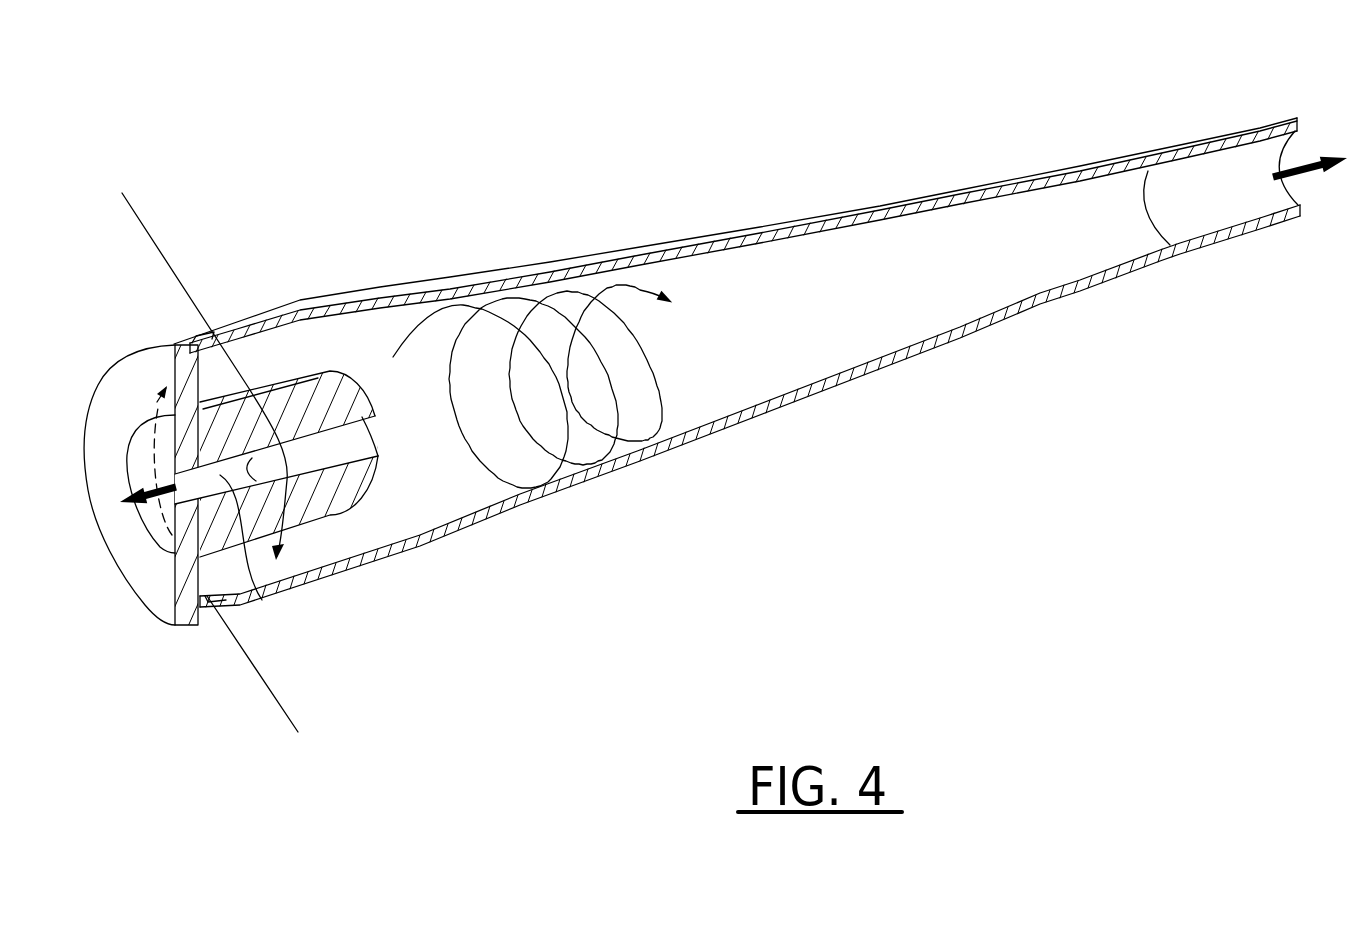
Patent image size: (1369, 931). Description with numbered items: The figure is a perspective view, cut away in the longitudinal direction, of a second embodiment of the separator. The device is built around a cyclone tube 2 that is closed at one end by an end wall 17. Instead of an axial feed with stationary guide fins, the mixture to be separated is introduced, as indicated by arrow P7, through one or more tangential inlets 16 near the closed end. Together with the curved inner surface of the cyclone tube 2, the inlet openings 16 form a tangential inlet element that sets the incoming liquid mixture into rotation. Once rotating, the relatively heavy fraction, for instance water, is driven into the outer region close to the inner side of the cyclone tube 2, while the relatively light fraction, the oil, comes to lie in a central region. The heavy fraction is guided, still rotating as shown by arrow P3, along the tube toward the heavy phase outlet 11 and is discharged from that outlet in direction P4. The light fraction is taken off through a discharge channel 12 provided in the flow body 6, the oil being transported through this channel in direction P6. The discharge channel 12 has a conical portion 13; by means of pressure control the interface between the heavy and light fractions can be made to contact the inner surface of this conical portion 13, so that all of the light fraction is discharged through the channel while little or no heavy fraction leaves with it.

The cyclone tube 2 is at (718, 233).
The flow body 6 is at (317, 388).
The heavy phase outlet 11 is at (1280, 157).
The discharge channel 12 is at (203, 577).
The conical portion 13 is at (345, 447).
The tangential inlets 16 is at (220, 338).
The end wall 17 is at (183, 370).
The rotation direction of heavy fraction P3 is at (553, 386).
The heavy fraction discharge direction P4 is at (1319, 153).
The oil transport direction P6 is at (135, 460).
The mixture inflow direction P7 is at (227, 449).